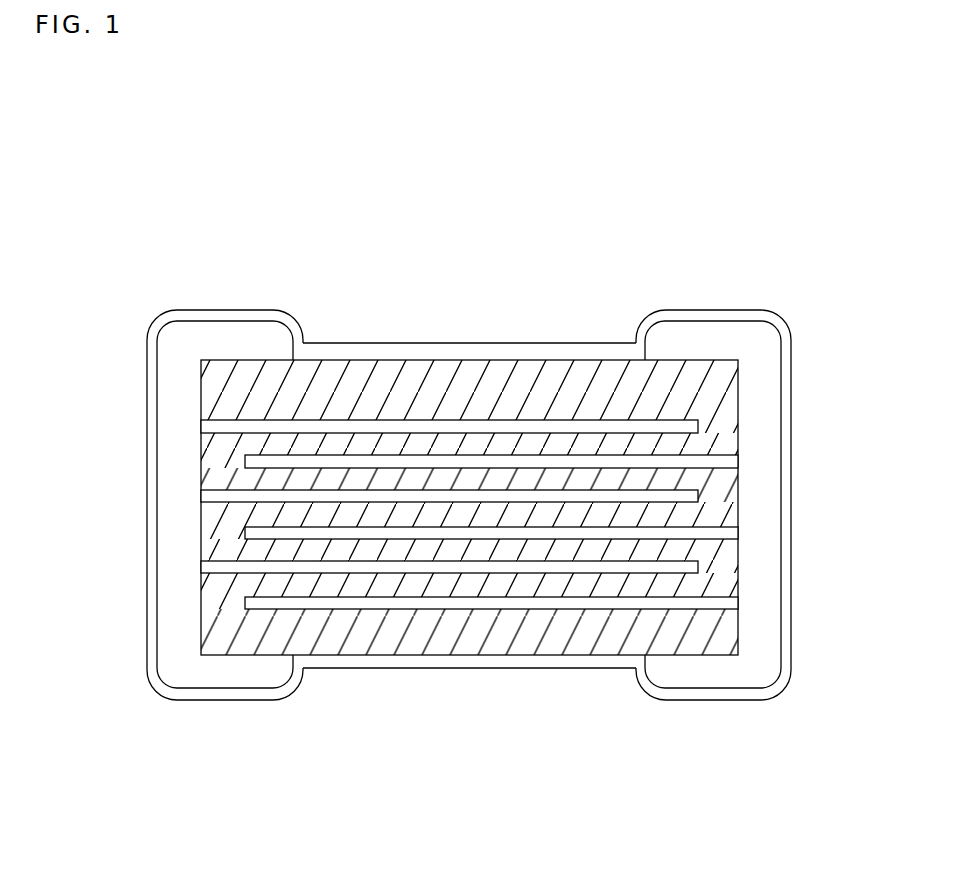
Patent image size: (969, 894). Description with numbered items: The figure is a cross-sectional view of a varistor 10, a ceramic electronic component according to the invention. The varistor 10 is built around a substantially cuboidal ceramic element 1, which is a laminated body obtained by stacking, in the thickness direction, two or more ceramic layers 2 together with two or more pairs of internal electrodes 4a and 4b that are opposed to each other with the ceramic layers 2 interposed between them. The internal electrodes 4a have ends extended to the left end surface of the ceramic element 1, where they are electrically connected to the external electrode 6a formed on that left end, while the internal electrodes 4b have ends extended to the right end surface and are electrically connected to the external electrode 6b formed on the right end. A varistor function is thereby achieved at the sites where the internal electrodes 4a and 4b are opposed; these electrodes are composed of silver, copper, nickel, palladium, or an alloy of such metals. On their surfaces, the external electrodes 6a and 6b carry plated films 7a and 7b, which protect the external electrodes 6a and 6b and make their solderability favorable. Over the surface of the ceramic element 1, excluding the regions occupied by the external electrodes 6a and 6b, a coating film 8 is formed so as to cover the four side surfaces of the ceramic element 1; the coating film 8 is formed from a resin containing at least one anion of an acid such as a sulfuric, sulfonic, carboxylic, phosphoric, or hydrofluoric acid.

The varistor 10 is at (167, 179).
The ceramic element 1 is at (409, 463).
The ceramic layers 2 is at (258, 395).
The internal electrodes 4a is at (595, 567).
The internal electrodes 4b is at (509, 461).
The external electrode 6a is at (177, 360).
The external electrode 6b is at (765, 357).
The plated film 7a is at (158, 318).
The plated film 7b is at (775, 317).
The coating film 8 is at (455, 352).